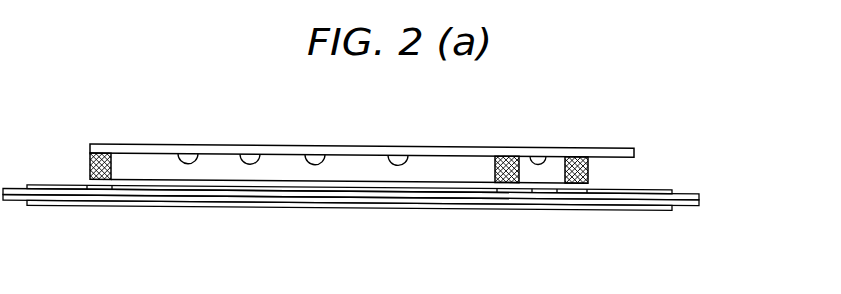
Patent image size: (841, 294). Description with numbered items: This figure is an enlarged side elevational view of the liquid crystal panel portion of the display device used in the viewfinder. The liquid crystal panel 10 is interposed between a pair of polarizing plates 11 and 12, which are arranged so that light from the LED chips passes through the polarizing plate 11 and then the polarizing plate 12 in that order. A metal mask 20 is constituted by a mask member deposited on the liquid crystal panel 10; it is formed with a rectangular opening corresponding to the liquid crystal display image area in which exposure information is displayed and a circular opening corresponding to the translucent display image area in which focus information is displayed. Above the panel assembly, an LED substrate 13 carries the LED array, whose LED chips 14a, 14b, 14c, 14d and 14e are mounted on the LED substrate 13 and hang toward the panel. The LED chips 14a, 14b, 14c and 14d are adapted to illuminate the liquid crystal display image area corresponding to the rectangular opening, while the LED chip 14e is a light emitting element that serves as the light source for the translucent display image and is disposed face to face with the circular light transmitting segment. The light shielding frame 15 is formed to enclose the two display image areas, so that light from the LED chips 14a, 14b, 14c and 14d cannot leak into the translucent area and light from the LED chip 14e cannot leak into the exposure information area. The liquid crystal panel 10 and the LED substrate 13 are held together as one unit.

The liquid crystal panel 10 is at (697, 196).
The polarizing plate 11 is at (667, 190).
The polarizing plate 12 is at (672, 212).
The LED substrate 13 is at (633, 149).
The LED chip 14a is at (402, 155).
The LED chip 14b is at (319, 157).
The LED chip 14c is at (255, 154).
The LED chip 14d is at (192, 154).
The LED chip 14e is at (544, 158).
The light shielding frame 15 is at (90, 160).
The metal mask 20 is at (99, 189).